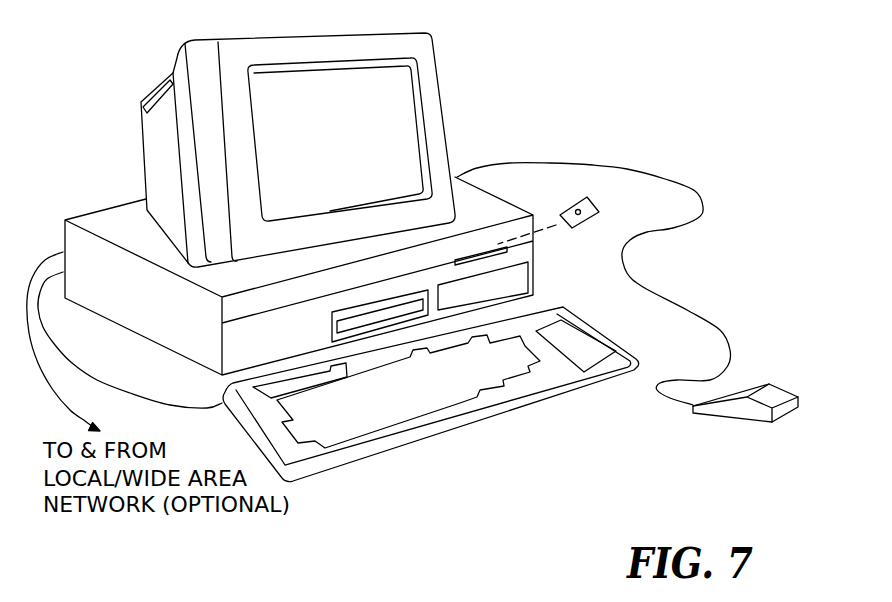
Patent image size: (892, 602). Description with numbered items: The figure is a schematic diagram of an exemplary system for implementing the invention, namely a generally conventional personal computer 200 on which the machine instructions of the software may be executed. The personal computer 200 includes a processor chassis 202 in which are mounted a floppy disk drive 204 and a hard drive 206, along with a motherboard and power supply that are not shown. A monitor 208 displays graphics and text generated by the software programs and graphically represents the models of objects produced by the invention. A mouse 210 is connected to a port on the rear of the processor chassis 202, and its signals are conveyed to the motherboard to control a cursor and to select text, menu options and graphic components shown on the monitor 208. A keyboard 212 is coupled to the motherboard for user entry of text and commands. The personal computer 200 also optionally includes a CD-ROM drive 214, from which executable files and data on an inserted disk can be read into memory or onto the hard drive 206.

The personal computer 200 is at (447, 453).
The processor chassis 202 is at (519, 250).
The floppy disk drive 204 is at (498, 243).
The hard drive 206 is at (503, 283).
The monitor 208 is at (440, 93).
The mouse 210 is at (777, 423).
The keyboard 212 is at (530, 410).
The compact disk-read only memory (CD-ROM) drive 214 is at (330, 324).